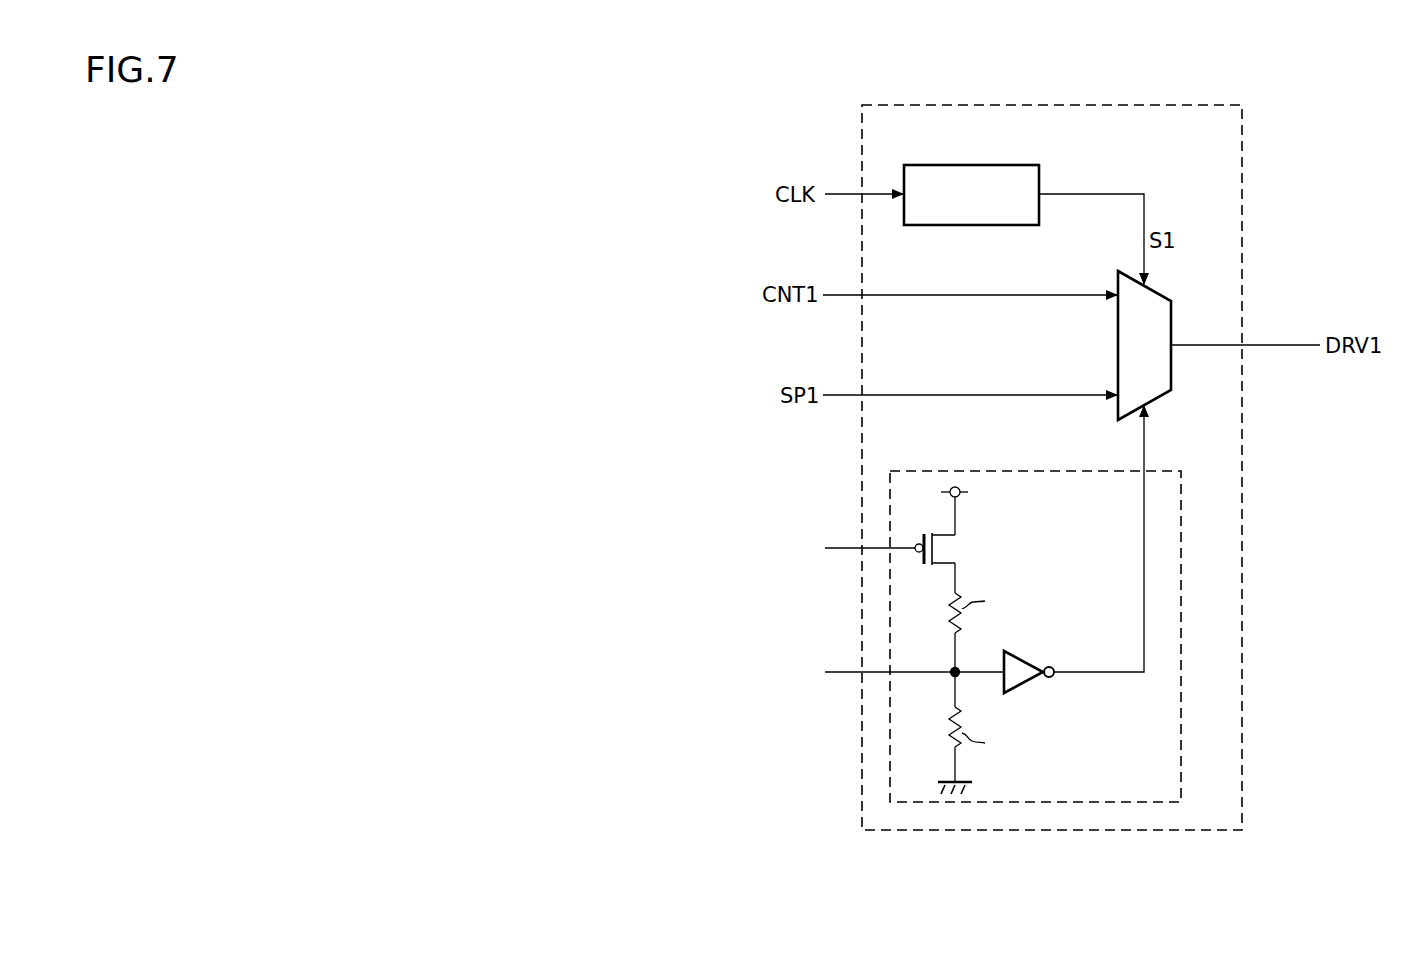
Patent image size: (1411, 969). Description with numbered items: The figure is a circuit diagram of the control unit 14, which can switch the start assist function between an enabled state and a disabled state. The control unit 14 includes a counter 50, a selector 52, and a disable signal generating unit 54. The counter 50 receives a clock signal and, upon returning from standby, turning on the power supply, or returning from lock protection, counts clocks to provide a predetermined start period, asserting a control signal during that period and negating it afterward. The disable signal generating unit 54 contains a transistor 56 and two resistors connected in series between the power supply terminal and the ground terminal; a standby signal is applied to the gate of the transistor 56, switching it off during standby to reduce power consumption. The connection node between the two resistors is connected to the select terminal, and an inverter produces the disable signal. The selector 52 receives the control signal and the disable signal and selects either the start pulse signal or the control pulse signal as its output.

The control unit 14 is at (1030, 831).
The counter 50 is at (990, 165).
The selector 52 is at (1162, 395).
The disable signal generating unit 54 is at (1000, 470).
The transistor 56 is at (955, 548).